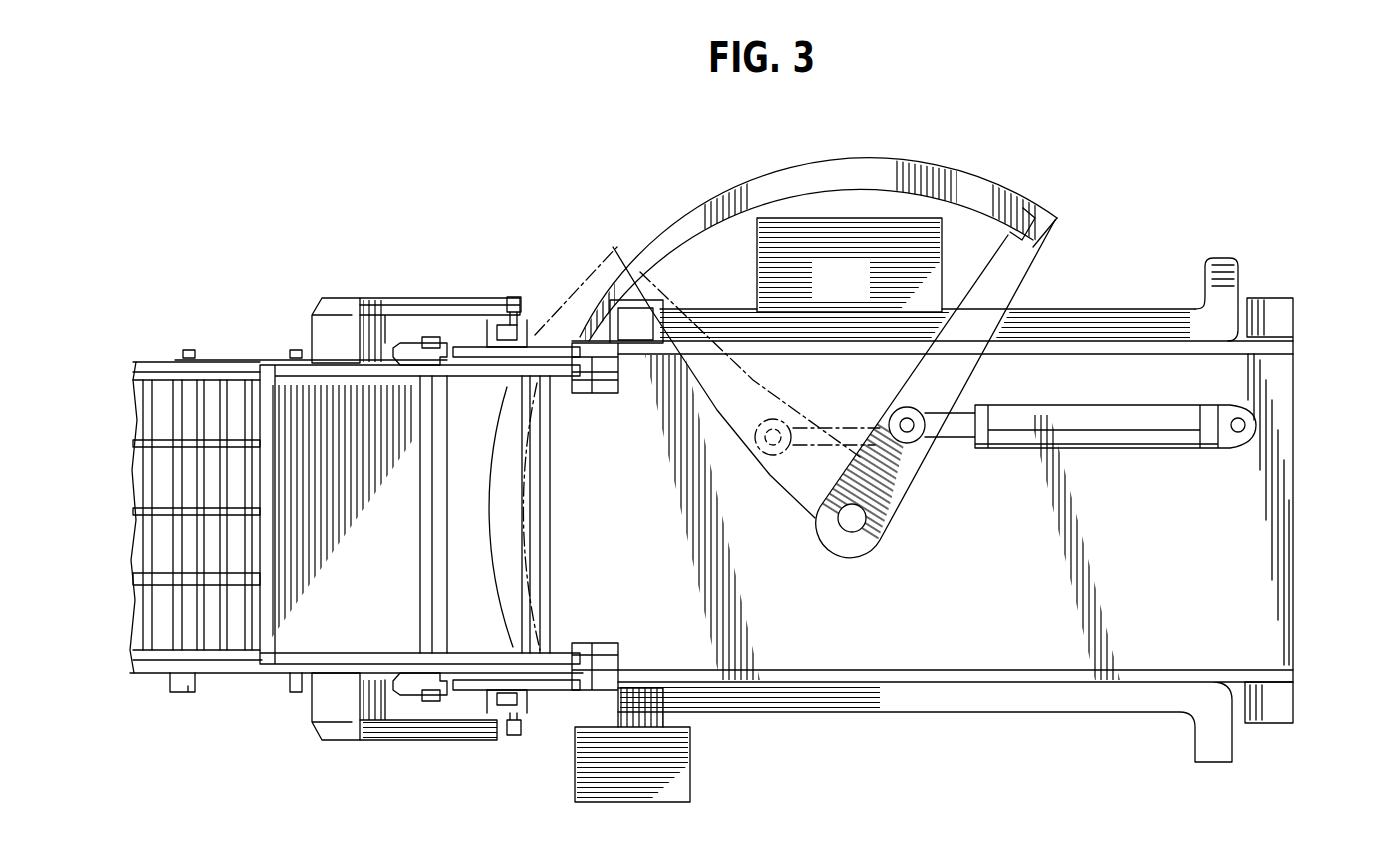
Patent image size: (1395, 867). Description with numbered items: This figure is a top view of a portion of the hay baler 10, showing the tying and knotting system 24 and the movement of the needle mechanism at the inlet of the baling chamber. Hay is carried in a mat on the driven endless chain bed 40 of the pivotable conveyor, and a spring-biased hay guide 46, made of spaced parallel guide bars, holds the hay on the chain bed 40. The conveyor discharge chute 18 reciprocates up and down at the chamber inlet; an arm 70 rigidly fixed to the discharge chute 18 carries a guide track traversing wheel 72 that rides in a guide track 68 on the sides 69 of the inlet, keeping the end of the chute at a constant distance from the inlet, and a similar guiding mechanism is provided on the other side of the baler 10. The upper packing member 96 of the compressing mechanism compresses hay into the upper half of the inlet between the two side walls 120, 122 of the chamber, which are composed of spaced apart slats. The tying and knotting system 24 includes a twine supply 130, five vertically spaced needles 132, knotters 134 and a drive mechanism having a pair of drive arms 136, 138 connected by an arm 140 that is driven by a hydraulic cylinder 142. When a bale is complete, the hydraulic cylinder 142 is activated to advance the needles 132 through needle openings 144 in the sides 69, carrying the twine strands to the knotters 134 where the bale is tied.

The baler 10 is at (1016, 770).
The conveyor discharge chute 18 is at (321, 296).
The tying and knotting system 24 is at (958, 157).
The chain bed 40 is at (141, 418).
The hay guide 46 is at (140, 573).
The guide track 68 is at (476, 340).
The sides 69 is at (467, 347).
The arm 70 is at (378, 297).
The guide track traversing wheel 72 is at (505, 297).
The upper packing member 96 is at (370, 605).
The side wall 120 is at (1158, 334).
The side wall 122 is at (861, 666).
The twine supply 130 is at (855, 297).
The needles 132 is at (672, 212).
The knotters 134 is at (666, 780).
The drive arm 136 is at (1035, 285).
The drive arm 138 is at (888, 497).
The arm 140 is at (1054, 220).
The hydraulic cylinder 142 is at (1175, 410).
The needle openings 144 is at (538, 347).